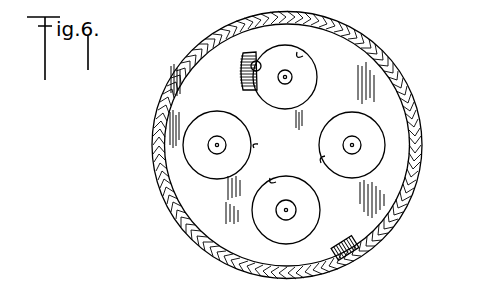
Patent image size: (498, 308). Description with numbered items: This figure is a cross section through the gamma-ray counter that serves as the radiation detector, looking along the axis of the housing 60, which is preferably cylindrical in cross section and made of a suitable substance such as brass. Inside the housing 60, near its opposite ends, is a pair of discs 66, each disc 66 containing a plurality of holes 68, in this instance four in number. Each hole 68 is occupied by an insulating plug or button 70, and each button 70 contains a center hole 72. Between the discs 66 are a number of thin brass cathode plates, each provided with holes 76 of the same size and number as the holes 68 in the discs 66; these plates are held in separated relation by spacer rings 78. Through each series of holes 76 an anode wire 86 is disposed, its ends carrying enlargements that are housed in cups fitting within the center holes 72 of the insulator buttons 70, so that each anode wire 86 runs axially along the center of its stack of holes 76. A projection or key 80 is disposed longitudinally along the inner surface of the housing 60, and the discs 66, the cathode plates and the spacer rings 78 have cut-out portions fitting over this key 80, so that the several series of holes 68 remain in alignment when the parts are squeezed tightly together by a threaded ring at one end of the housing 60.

The housing 60 is at (412, 92).
The spacer ring 78 is at (404, 140).
The insulating plug or button 70 is at (240, 129).
The center hole 72 is at (297, 74).
The anode wire 86 is at (292, 82).
The hole 76 is at (297, 52).
The disc 66 is at (250, 55).
The hole 68 is at (244, 76).
The projection or key 80 is at (374, 238).